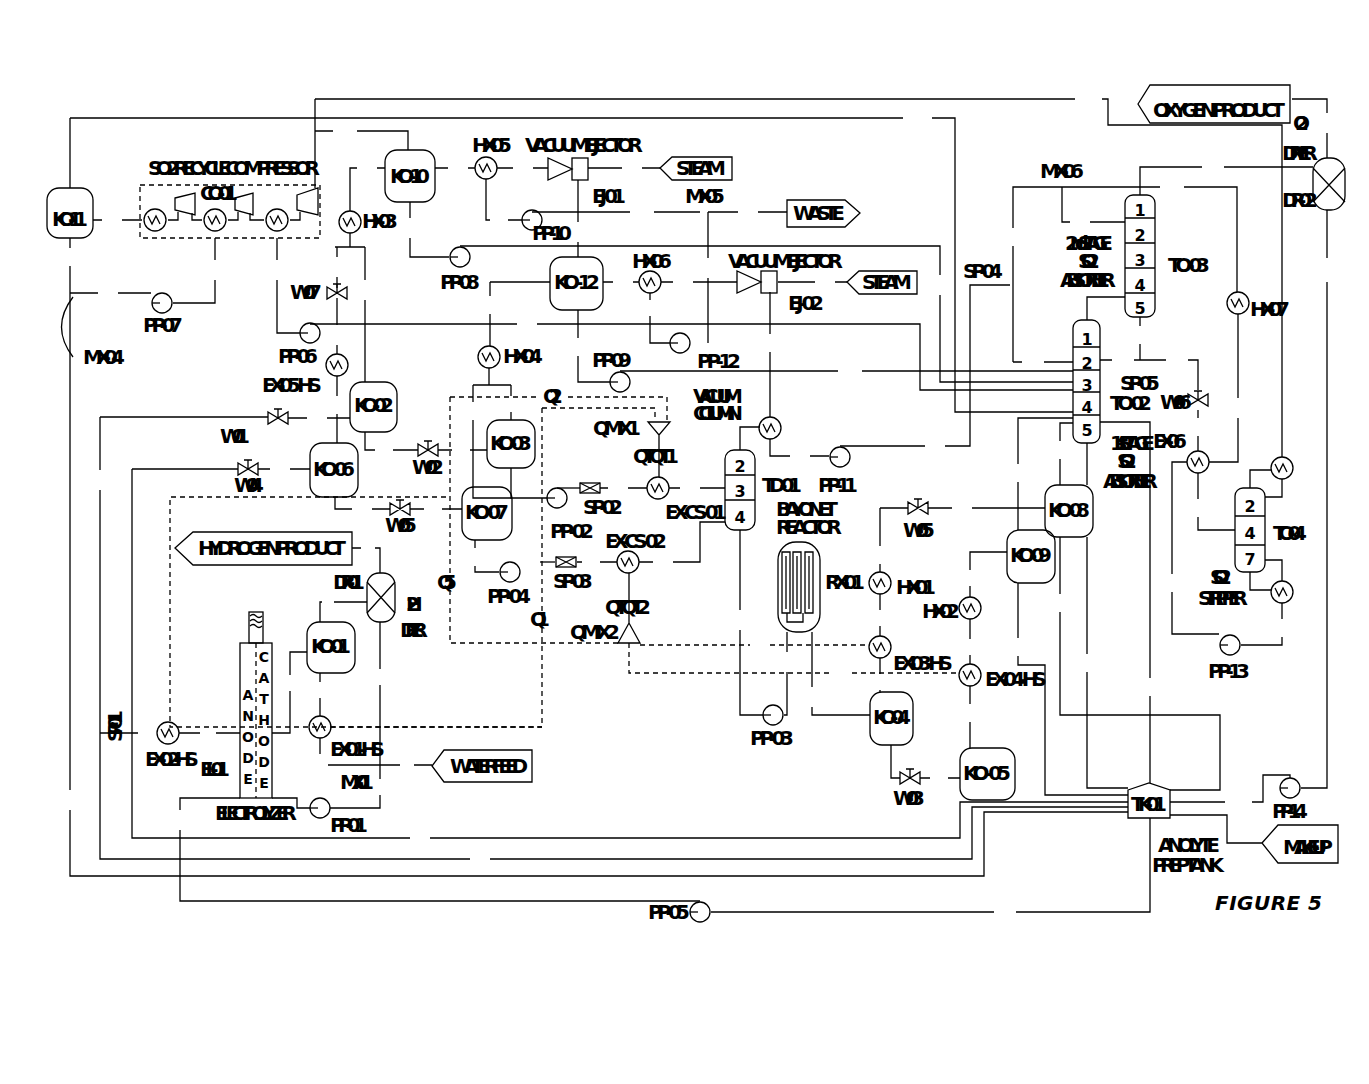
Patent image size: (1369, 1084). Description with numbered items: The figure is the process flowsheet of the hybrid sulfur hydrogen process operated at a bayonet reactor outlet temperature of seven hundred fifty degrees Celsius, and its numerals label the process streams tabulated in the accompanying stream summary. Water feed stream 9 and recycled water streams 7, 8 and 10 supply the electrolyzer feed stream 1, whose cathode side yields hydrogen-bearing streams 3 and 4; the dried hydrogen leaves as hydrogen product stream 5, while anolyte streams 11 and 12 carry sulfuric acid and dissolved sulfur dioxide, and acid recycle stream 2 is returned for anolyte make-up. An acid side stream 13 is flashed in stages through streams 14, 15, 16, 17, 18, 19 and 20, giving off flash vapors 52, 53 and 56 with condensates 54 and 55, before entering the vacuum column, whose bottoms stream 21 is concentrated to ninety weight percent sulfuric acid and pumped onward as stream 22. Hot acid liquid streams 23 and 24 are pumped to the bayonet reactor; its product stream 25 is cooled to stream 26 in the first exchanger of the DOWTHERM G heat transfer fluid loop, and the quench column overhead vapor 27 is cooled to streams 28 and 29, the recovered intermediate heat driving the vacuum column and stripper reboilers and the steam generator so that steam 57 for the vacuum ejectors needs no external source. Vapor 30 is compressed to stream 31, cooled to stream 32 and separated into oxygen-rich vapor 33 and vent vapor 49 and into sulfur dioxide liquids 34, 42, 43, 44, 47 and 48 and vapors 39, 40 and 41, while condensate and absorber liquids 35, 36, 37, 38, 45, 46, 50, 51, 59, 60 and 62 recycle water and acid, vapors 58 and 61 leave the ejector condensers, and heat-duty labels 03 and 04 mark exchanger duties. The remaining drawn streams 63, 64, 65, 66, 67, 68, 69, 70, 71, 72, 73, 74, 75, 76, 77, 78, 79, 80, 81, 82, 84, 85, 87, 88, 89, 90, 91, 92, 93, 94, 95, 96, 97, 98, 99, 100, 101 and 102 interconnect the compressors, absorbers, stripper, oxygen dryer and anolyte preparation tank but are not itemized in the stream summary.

The electrolyzer feed liquid stream 1 is at (291, 792).
The acid recycle liquid stream 2 is at (438, 849).
The cathode product stream 3 is at (289, 692).
The wet hydrogen vapor stream 4 is at (340, 653).
The hydrogen product stream 5 is at (366, 554).
The two-phase water stream 7 is at (346, 757).
The dryer condensate stream 8 is at (383, 693).
The water feed stream 9 is at (405, 765).
The combined water stream 10 is at (359, 786).
The anode product stream 11 is at (209, 733).
The cooled anolyte stream 12 is at (128, 733).
The acid side stream 13 is at (180, 575).
The first flash acid stream 14 is at (319, 421).
The first flash liquid stream 15 is at (391, 447).
The second flash acid stream 16 is at (462, 450).
The second flash liquid stream 17 is at (529, 483).
The pumped acid stream 18 is at (563, 485).
The vacuum column feed stream 19 is at (623, 488).
The heated vacuum column feed stream 20 is at (697, 488).
The vacuum column bottoms stream 21 is at (746, 622).
The pumped concentrated acid stream 22 is at (786, 673).
The hot acid liquid stream 23 is at (836, 673).
The bayonet reactor feed stream 24 is at (883, 761).
The bayonet reactor product stream 25 is at (940, 778).
The cooled reactor product stream 26 is at (630, 659).
The quench column overhead vapor stream 27 is at (221, 469).
The partially condensed overhead stream 28 is at (362, 509).
The cooled overhead stream 29 is at (436, 509).
The sulfur dioxide/oxygen vapor stream 30 is at (482, 556).
The compressed gas stream 31 is at (538, 562).
The cooled compressed gas stream 32 is at (597, 562).
The oxygen-rich vapor stream 33 is at (682, 548).
The liquid sulfur dioxide stream 34 is at (879, 676).
The condensate stream 35 is at (879, 615).
The reduced-pressure condensate stream 36 is at (889, 540).
The absorber acid liquid stream 37 is at (986, 508).
The sulfur dioxide-loaded anolyte stream 38 is at (1135, 663).
The sulfur dioxide vapor stream 39 is at (1061, 454).
The cooled sulfur dioxide stream 40 is at (969, 717).
The low-pressure sulfur dioxide vapor stream 41 is at (969, 641).
The two-phase sulfur dioxide stream 42 is at (983, 574).
The sulfur dioxide liquid stream 43 is at (1068, 689).
The combined sulfur dioxide liquid stream 44 is at (1040, 474).
The water condensate stream 45 is at (614, 802).
The pumped water condensate stream 46 is at (930, 871).
The sulfur dioxide condensate stream 47 is at (364, 314).
The pumped sulfur dioxide condensate stream 48 is at (336, 409).
The vent vapor stream 49 is at (336, 326).
The intercooler condensate stream 50 is at (346, 260).
The pumped intercooler condensate stream 51 is at (367, 183).
The second flash vapor stream 52 is at (361, 142).
The cooled flash vapor stream 53 is at (117, 220).
The flash condensate stream 54 is at (69, 260).
The pumped flash condensate stream 55 is at (593, 579).
The flash vent vapor stream 56 is at (283, 285).
The steam stream 57 is at (691, 351).
The ejector discharge vapor stream 58 is at (198, 270).
The ejector condensate stream 59 is at (110, 293).
The pumped ejector condensate stream 60 is at (571, 259).
The ejector vent vapor stream 61 is at (424, 229).
The vacuum column condensate stream 62 is at (766, 314).
The stream to KO-03 63 is at (504, 402).
The stream to PP-02 64 is at (487, 433).
The stream to KO-12 65 is at (515, 314).
The KO-12 bottoms stream 66 is at (589, 346).
The PP-09 discharge stream 67 is at (846, 371).
The KO-12 vapor stream 68 is at (588, 218).
The steam to ejector EJ-01 69 is at (624, 168).
The ejector discharge to HX-05 70 is at (522, 168).
The HX-05 condensate 71 is at (504, 205).
The PP-10 discharge stream 72 is at (616, 212).
The stream to KO-10 73 is at (455, 168).
The vacuum column overhead stream 74 is at (799, 453).
The PP-11 discharge stream 75 is at (925, 371).
The vacuum column vapor stream 76 is at (769, 354).
The steam to ejector EJ-02 77 is at (812, 282).
The ejector discharge to HX-06 78 is at (699, 282).
The HX-06 condensate 79 is at (655, 318).
The stream to MX-05 80 is at (709, 277).
The waste stream 81 is at (747, 212).
The stream to absorber 82 is at (838, 322).
The KO-08 liquid stream 84 is at (1104, 662).
The absorber bottoms stream 85 is at (1129, 602).
The absorber overhead stream 87 is at (1032, 274).
The stream to second stage absorber 88 is at (1093, 210).
The second stage absorber bottoms 89 is at (1142, 338).
The split stream to absorber 90 is at (1120, 360).
The split stream to valve W-06 91 is at (1169, 369).
The stream to EX-06 92 is at (1197, 430).
The stream to SO2 stripper 93 is at (1211, 501).
The stripper bottoms stream 94 is at (1266, 624).
The PP-13 discharge stream 95 is at (1190, 548).
The stream from EX-06 to HX-07 96 is at (1228, 388).
The stream from HX-07 to MX-06 97 is at (1149, 233).
The oxygen stream 98 is at (798, 272).
The stream to oxygen dryer 99 is at (1226, 175).
The oxygen product stream 100 is at (1317, 128).
The dryer water stream 101 is at (1321, 499).
The PP-14 discharge stream 102 is at (1230, 794).
The heat stream Q3 03 is at (754, 645).
The heat stream Q4 04 is at (794, 664).